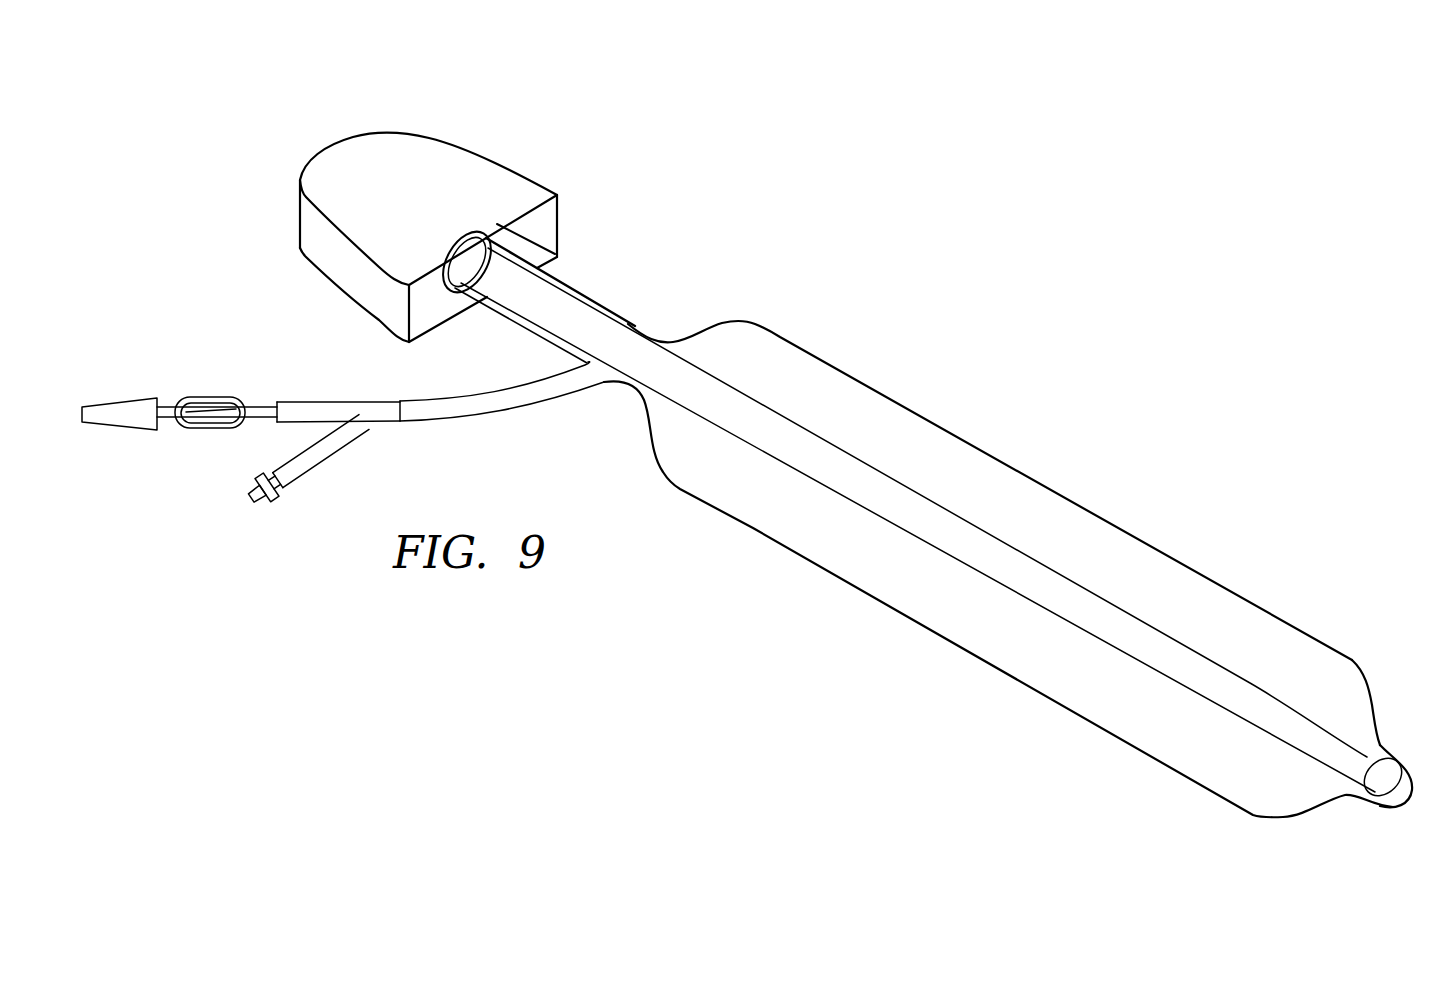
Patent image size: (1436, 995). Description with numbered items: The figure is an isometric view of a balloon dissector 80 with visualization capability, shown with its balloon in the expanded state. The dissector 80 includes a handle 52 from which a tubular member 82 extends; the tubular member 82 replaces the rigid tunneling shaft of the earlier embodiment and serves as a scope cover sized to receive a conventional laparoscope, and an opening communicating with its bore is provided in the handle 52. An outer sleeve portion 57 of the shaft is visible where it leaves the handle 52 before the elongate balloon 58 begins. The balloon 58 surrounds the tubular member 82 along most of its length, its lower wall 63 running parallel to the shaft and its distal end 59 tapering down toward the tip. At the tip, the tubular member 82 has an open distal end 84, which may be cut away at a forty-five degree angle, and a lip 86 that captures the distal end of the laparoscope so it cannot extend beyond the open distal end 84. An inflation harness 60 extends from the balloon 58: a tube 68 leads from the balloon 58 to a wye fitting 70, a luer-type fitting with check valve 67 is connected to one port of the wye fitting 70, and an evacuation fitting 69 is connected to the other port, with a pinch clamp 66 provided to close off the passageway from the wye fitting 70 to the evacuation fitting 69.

The handle 52 is at (462, 167).
The outer sheath tube 57 is at (603, 304).
The elongate balloon 58 is at (1045, 480).
The distal end of balloon 59 is at (1370, 690).
The inflation harness 60 is at (249, 351).
The balloon lower wall 63 is at (1117, 715).
The pinch clamp 66 is at (195, 430).
The luer-type fitting with check valve 67 is at (272, 503).
The tube 68 is at (430, 424).
The evacuation fitting 69 is at (125, 402).
The wye fitting 70 is at (333, 402).
The balloon dissector 80 is at (886, 316).
The tubular member 82 is at (927, 498).
The open distal end 84 is at (1375, 797).
The lip 86 is at (1405, 763).